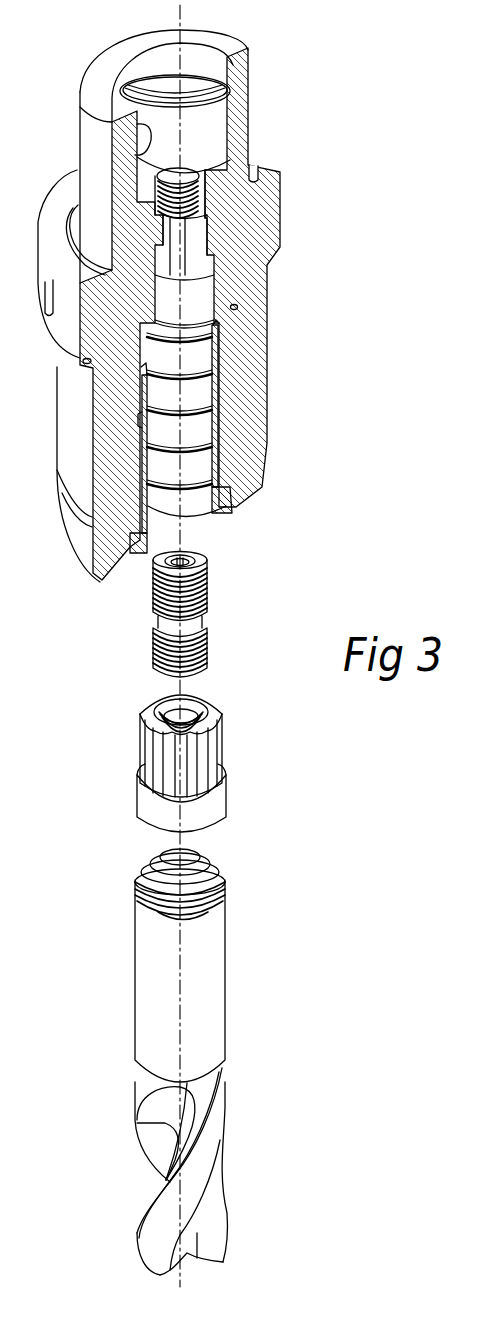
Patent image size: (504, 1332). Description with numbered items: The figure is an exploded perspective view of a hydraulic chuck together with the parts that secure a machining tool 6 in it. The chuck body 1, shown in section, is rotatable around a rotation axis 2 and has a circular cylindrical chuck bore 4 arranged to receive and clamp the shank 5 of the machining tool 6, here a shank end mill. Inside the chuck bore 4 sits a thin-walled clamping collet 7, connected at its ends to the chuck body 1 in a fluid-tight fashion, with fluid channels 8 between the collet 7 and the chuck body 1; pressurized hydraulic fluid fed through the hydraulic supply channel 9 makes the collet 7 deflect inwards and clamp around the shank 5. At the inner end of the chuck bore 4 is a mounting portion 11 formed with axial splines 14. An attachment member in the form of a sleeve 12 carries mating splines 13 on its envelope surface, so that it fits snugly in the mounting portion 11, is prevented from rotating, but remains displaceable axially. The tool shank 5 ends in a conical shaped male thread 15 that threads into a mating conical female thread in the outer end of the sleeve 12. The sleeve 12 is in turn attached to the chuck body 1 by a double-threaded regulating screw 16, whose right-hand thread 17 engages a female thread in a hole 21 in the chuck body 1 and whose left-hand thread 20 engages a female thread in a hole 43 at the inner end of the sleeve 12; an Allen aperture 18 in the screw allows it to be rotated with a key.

The chuck body 1 is at (258, 366).
The rotation axis 2 is at (180, 27).
The chuck bore 4 is at (204, 500).
The shank 5 is at (217, 988).
The machining tool 6 is at (120, 1029).
The clamping collet 7 is at (213, 435).
The fluid channels 8 is at (141, 422).
The hydraulic supply channel 9 is at (237, 311).
The mounting portion 11 is at (200, 250).
The sleeve 12 is at (235, 751).
The splines 13 is at (160, 750).
The splines 14 is at (190, 226).
The conical shaped male thread 15 is at (207, 868).
The double-threaded regulating screw 16 is at (224, 617).
The right-hand thread 17 is at (162, 600).
The Allen aperture 18 is at (190, 565).
The left-hand thread 20 is at (162, 651).
The hole 21 is at (188, 180).
The hole 43 is at (193, 712).